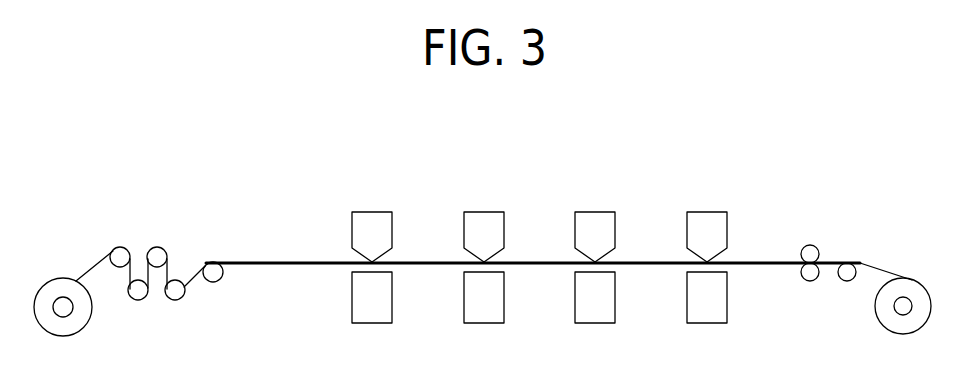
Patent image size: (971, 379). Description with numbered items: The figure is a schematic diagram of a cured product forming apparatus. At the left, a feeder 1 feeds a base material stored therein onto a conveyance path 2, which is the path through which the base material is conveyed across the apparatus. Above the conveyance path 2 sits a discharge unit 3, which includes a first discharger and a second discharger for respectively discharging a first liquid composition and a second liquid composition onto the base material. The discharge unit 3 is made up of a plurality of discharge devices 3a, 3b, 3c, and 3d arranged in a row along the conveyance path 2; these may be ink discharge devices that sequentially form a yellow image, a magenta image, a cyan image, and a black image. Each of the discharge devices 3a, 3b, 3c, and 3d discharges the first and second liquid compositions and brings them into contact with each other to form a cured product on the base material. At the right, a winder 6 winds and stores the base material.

The feeder 1 is at (68, 309).
The conveyance path 2 is at (250, 261).
The discharge unit 3 is at (743, 177).
The discharge device 3a is at (370, 223).
The discharge device 3b is at (482, 222).
The discharge device 3c is at (590, 222).
The discharge device 3d is at (702, 222).
The winder 6 is at (896, 308).